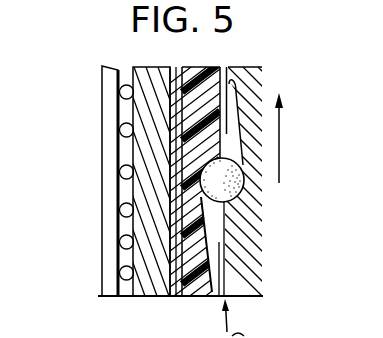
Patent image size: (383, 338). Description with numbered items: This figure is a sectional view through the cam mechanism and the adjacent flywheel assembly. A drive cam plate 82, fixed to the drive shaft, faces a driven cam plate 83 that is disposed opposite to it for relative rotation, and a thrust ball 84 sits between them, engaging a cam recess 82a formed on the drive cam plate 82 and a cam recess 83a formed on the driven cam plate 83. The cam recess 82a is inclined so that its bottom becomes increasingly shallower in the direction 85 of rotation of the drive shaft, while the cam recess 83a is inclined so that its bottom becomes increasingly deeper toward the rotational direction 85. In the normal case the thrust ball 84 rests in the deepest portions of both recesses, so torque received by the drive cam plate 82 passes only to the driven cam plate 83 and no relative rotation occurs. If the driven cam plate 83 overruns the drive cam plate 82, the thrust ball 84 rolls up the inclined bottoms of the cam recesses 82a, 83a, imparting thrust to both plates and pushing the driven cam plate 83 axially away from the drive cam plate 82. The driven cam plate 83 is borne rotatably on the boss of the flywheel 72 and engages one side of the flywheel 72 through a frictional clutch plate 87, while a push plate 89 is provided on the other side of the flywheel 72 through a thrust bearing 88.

The flywheel 72 is at (157, 287).
The frictional clutch plate 87 is at (176, 285).
The driven cam plate 83 is at (203, 288).
The cam recess 83a is at (223, 230).
The thrust ball 84 is at (244, 186).
The drive cam plate 82 is at (253, 290).
The cam recess 82a is at (236, 108).
The direction of rotation 85 is at (280, 150).
The thrust bearing 88 is at (121, 88).
The push plate 89 is at (105, 159).